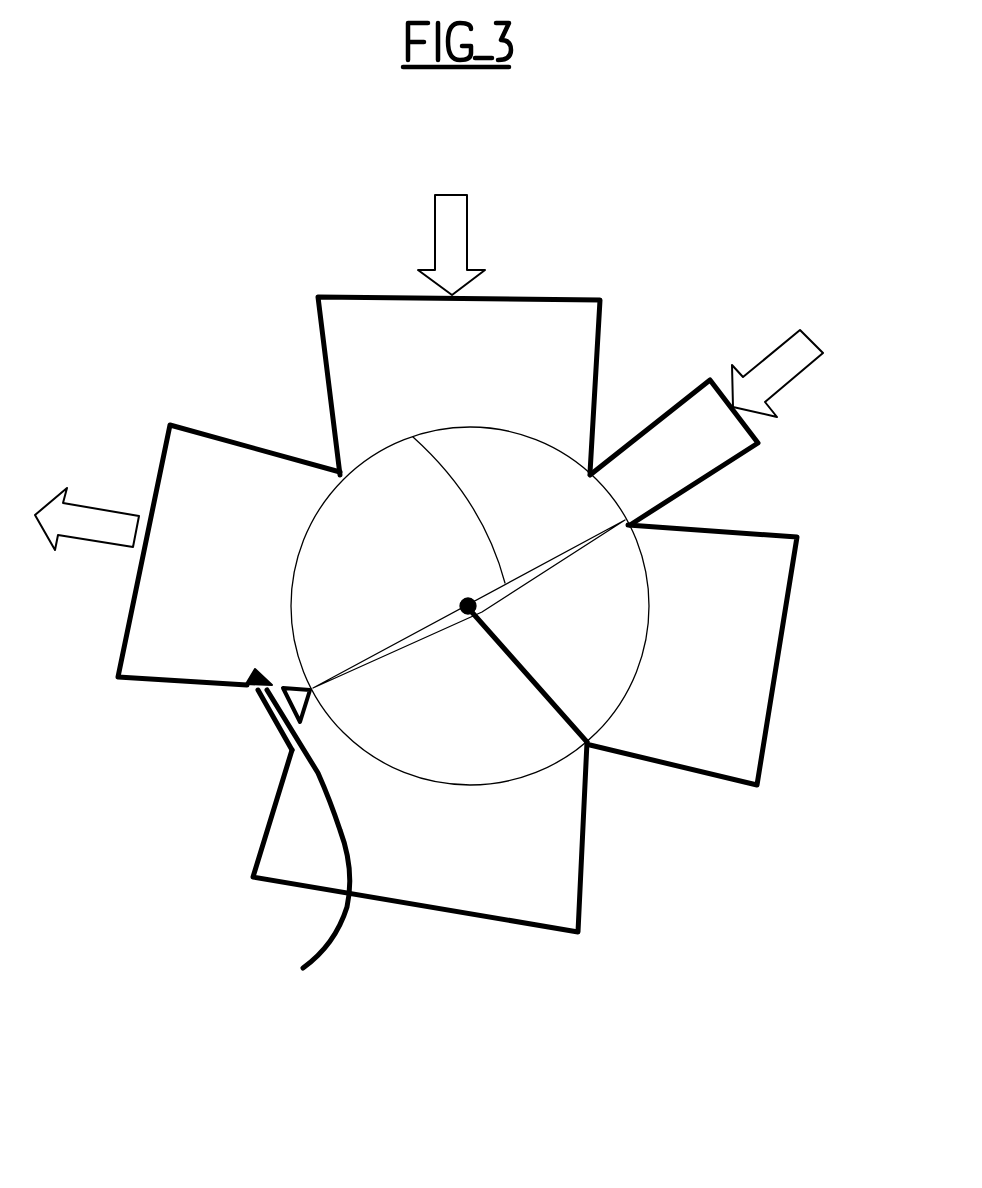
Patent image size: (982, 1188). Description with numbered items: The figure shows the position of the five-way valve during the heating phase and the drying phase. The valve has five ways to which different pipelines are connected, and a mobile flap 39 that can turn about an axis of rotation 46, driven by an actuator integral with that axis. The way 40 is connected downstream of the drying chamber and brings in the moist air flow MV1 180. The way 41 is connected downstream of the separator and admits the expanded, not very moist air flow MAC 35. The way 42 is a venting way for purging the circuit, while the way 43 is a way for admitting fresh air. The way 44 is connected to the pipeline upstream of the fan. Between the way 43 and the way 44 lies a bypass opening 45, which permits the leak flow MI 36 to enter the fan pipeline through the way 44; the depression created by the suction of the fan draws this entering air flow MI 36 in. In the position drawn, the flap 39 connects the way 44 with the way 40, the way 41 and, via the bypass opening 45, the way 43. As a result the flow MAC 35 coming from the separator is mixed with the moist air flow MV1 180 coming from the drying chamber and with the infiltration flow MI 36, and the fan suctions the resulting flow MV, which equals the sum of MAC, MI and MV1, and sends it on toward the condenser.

The air flow MAC 35 is at (802, 353).
The air infiltration flow MI 36 is at (340, 938).
The mobile flap 39 is at (413, 437).
The way 40 is at (398, 375).
The way 41 is at (685, 440).
The venting way 42 is at (705, 582).
The way for admitting fresh air 43 is at (477, 860).
The way 44 is at (178, 635).
The bypass opening 45 is at (263, 697).
The axis of rotation 46 is at (477, 613).
The moist air flow MV1 180 is at (447, 225).
The flow MV is at (102, 532).